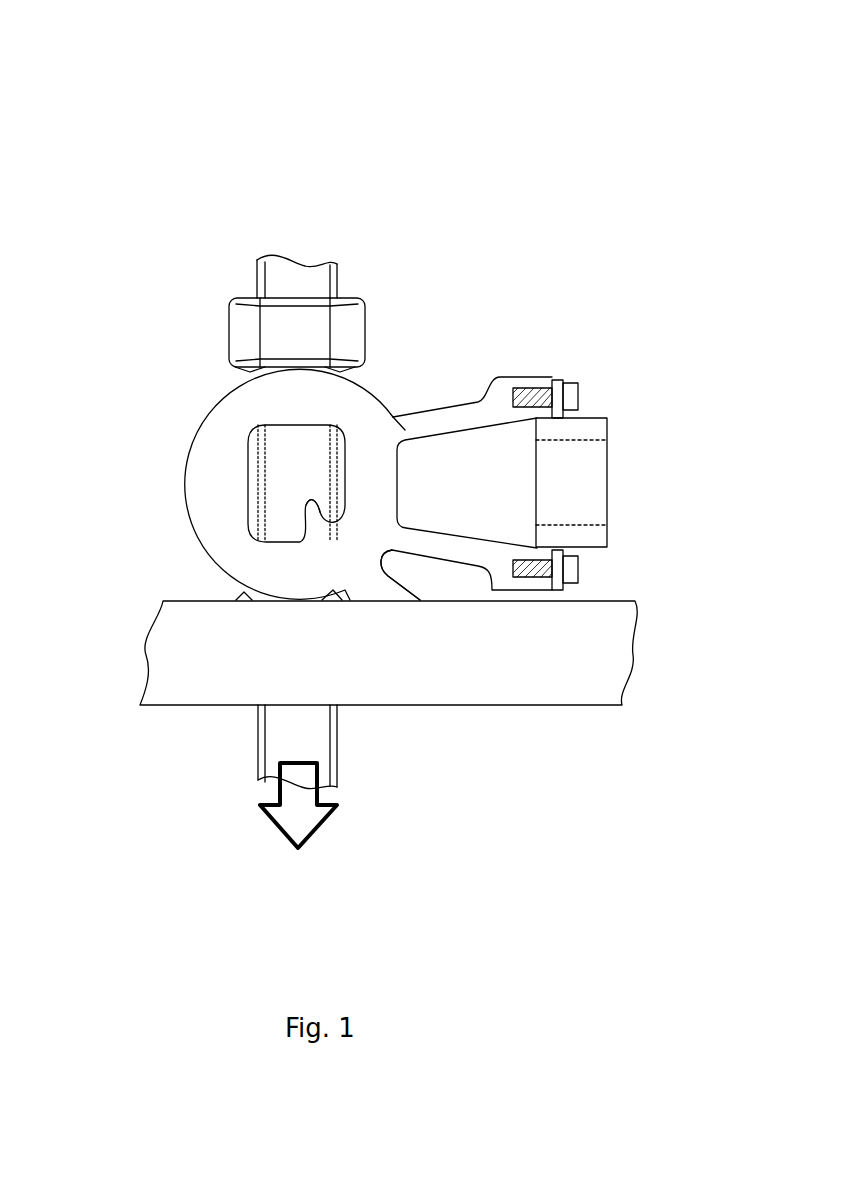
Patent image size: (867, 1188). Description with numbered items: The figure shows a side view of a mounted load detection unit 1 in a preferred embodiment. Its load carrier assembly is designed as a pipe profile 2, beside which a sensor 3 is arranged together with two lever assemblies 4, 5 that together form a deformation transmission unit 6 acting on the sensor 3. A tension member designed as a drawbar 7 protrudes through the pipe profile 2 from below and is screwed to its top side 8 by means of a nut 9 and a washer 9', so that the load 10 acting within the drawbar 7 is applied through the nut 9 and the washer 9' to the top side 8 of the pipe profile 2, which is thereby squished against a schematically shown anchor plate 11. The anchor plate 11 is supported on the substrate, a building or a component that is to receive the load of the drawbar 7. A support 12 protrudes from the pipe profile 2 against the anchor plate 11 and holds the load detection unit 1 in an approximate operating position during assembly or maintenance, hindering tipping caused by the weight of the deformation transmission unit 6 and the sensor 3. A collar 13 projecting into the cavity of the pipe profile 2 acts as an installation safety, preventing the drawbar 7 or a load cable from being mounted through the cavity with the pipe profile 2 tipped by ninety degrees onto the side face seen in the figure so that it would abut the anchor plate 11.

The load detection unit 1 is at (429, 138).
The pipe profile 2 is at (231, 484).
The sensor 3 is at (585, 492).
The lever assembly 4 is at (457, 376).
The lever assembly 5 is at (451, 518).
The deformation transmission unit 6 is at (398, 273).
The drawbar 7 is at (282, 268).
The top side 8 is at (382, 378).
The nut 9 is at (259, 309).
The washer 9' is at (222, 338).
The load 10 is at (310, 818).
The anchor plate 11 is at (246, 657).
The support 12 is at (405, 592).
The collar 13 is at (316, 512).